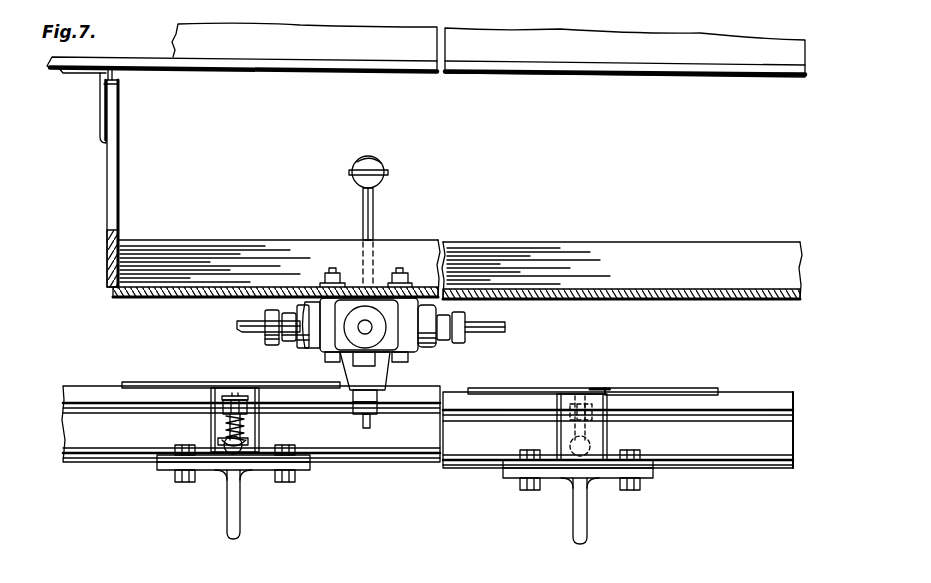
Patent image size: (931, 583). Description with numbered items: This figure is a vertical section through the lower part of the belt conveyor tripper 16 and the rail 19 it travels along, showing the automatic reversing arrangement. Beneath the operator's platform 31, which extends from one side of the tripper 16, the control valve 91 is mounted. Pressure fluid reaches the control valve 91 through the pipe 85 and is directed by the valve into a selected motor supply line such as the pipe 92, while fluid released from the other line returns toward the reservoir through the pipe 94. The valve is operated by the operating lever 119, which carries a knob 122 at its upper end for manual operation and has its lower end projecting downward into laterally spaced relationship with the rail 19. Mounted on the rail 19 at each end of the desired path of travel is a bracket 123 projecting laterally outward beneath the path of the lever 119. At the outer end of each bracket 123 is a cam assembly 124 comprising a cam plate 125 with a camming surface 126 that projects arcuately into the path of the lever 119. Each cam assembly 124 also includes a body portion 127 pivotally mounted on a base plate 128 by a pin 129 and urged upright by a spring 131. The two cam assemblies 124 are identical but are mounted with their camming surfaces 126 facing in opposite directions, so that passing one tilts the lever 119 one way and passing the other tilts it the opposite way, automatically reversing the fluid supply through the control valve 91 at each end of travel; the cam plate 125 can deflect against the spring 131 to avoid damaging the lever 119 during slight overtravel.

The belt conveyor tripper 16 is at (629, 34).
The rails 19 is at (746, 404).
The operator's platform 31 is at (572, 292).
The pipe 85 is at (245, 327).
The control valve 91 is at (330, 336).
The pipe 92 is at (481, 333).
The pipe 94 is at (373, 424).
The operating lever 119 is at (374, 210).
The knob 122 is at (370, 160).
The bracket 123 is at (238, 498).
The cam assembly 124 is at (210, 422).
The cam plate 125 is at (205, 386).
The camming surface 126 is at (649, 390).
The body portion 127 is at (254, 430).
The base plate 128 is at (309, 472).
The pin 129 is at (226, 455).
The spring 131 is at (218, 440).